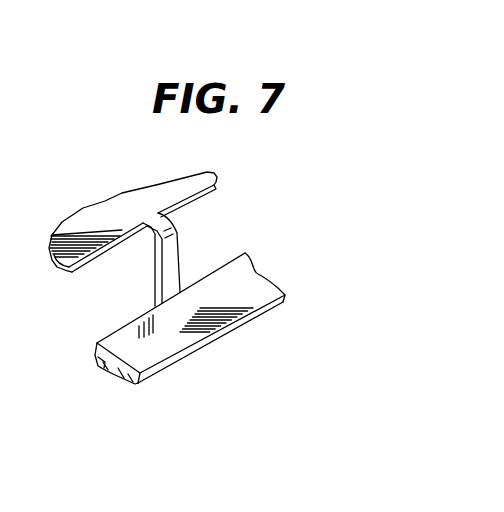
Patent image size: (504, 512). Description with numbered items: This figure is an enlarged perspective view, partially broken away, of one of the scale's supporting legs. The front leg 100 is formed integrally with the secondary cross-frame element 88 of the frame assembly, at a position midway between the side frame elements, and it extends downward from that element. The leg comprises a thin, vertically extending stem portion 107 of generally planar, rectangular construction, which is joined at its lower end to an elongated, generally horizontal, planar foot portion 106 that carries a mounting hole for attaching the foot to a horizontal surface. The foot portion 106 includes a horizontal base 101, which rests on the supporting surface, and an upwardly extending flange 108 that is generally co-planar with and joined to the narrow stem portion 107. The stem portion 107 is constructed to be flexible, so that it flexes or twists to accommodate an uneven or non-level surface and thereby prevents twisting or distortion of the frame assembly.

The secondary cross-frame element 88 is at (138, 201).
The front leg 100 is at (125, 284).
The horizontal base 101 is at (130, 365).
The foot portion 106 is at (260, 290).
The stem portion 107 is at (177, 250).
The upwardly extending flange 108 is at (98, 358).